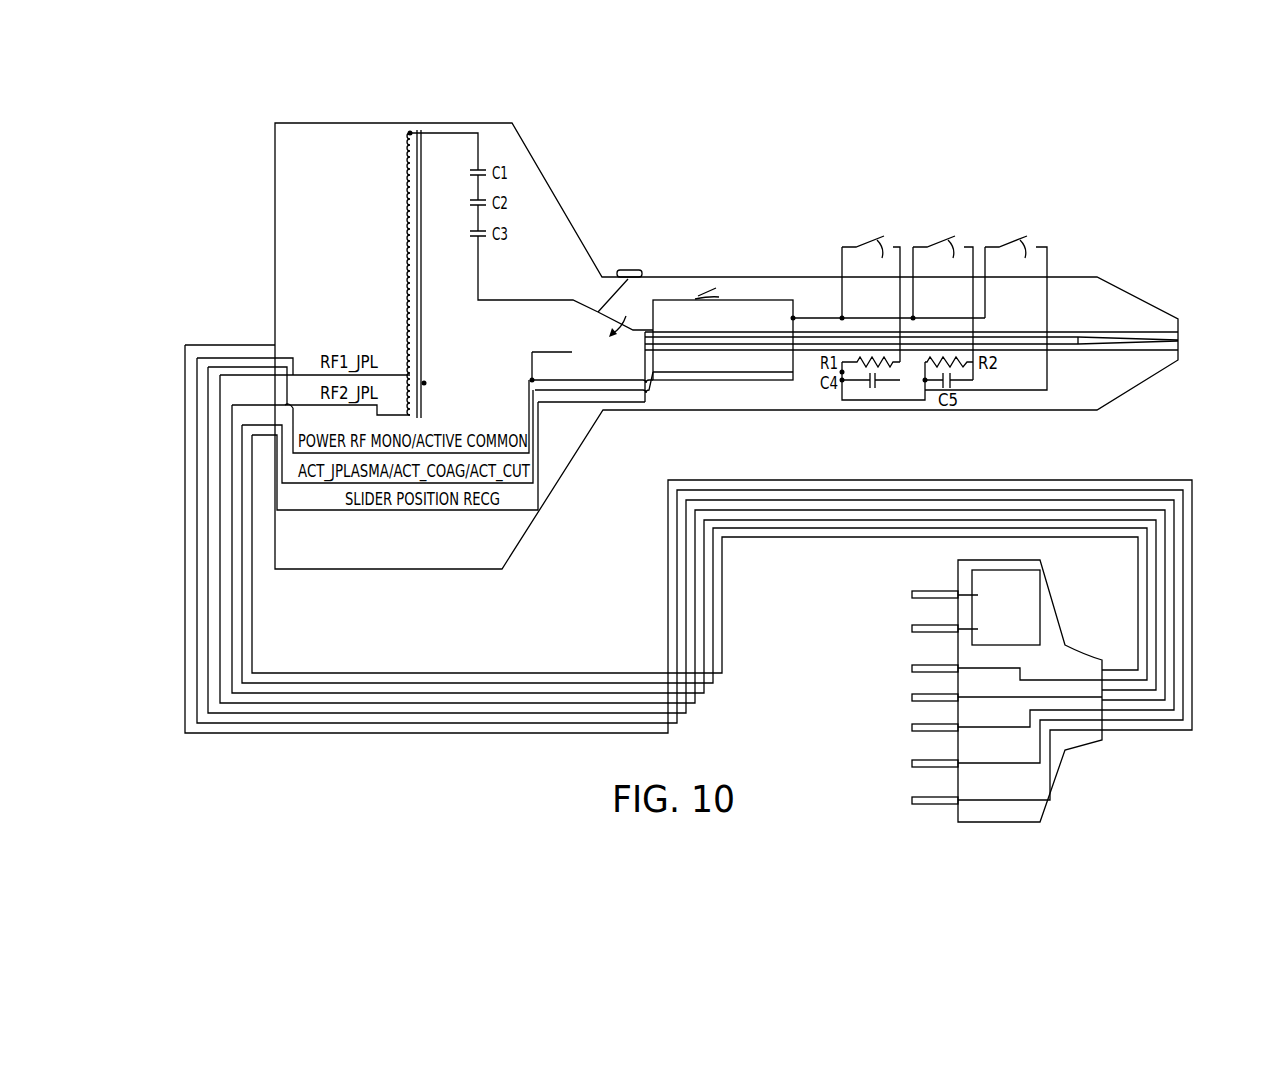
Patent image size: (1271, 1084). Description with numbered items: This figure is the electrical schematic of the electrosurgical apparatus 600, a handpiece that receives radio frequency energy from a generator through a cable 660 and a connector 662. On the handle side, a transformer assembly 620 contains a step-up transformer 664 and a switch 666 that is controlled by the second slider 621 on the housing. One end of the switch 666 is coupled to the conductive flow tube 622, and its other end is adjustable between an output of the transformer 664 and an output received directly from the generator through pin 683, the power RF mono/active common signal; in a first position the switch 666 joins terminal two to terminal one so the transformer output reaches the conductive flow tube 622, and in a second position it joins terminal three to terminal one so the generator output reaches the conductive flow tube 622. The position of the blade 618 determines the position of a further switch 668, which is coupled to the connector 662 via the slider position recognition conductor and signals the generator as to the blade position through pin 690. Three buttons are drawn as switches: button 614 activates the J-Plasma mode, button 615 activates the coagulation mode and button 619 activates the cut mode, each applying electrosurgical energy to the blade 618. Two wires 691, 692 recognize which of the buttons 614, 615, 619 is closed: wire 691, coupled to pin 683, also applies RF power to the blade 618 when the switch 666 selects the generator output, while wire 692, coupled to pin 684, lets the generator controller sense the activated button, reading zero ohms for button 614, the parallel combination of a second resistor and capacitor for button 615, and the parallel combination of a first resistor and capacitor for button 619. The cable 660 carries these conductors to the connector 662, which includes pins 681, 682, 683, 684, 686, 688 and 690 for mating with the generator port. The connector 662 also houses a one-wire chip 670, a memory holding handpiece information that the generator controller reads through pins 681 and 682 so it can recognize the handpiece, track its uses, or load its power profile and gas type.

The electrosurgical apparatus 600 is at (1160, 136).
The button 614 is at (1030, 203).
The button 615 is at (954, 203).
The blade 618 is at (1148, 340).
The button 619 is at (882, 203).
The transformer assembly 620 is at (291, 155).
The second slider 621 is at (629, 268).
The conductive flow tube 622 is at (807, 342).
The cable 660 is at (1044, 482).
The connector 662 is at (1055, 776).
The transformer T1 664 is at (385, 208).
The switch 666 is at (584, 286).
The switch 668 is at (712, 288).
The one-wire chip 670 is at (1031, 586).
The pin 681 is at (953, 590).
The pin 682 is at (953, 624).
The pin 683 is at (953, 664).
The pin 684 is at (953, 693).
The pin 686 is at (953, 723).
The pin 688 is at (953, 759).
The pin 690 is at (953, 796).
The wire 691 is at (528, 407).
The wire 692 is at (542, 427).